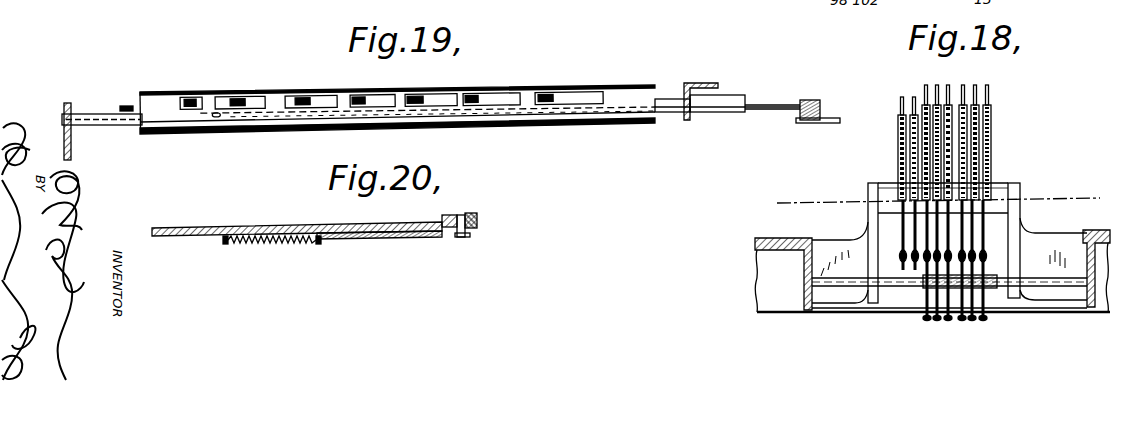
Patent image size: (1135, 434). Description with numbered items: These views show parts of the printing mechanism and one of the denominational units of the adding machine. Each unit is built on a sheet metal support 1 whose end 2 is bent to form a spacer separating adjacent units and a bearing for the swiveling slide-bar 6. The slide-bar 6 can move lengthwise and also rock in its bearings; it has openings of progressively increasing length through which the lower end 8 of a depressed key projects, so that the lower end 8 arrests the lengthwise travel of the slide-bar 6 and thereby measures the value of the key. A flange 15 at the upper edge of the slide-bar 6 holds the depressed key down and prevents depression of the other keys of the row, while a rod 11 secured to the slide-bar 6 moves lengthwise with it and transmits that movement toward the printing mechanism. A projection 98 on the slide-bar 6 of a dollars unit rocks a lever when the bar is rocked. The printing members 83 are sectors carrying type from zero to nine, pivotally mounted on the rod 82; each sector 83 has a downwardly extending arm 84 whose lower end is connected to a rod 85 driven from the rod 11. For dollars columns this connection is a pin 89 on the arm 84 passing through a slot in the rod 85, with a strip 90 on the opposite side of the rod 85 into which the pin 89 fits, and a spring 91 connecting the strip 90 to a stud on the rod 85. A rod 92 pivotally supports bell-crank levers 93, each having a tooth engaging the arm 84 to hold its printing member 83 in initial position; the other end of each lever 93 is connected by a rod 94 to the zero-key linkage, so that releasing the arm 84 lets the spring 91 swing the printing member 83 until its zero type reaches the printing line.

In FIG. 19, the support 1 is at (713, 82).
In FIG. 19, the end of support 2 is at (64, 142).
In FIG. 19, the swiveling slide-bar 6 is at (548, 108).
In FIG. 19, the lower end of key 8 is at (480, 102).
In FIG. 19, the rod 11 is at (758, 108).
In FIG. 19, the flange 15 is at (600, 121).
In FIG. 18, the rod 82 is at (996, 186).
In FIG. 18, the printing members 83 is at (926, 100).
In FIG. 20, the downwardly extending arm 84 is at (452, 215).
In FIG. 18, the downwardly extending arm 84 is at (932, 226).
In FIG. 20, the rod 85 is at (413, 227).
In FIG. 20, the pin 89 is at (466, 218).
In FIG. 20, the strip 90 is at (417, 237).
In FIG. 20, the spring 91 is at (283, 244).
In FIG. 18, the rod 92 is at (853, 286).
In FIG. 18, the bell-crank levers 93 is at (940, 293).
In FIG. 18, the rod 94 is at (927, 317).
In FIG. 19, the projection 98 is at (328, 102).